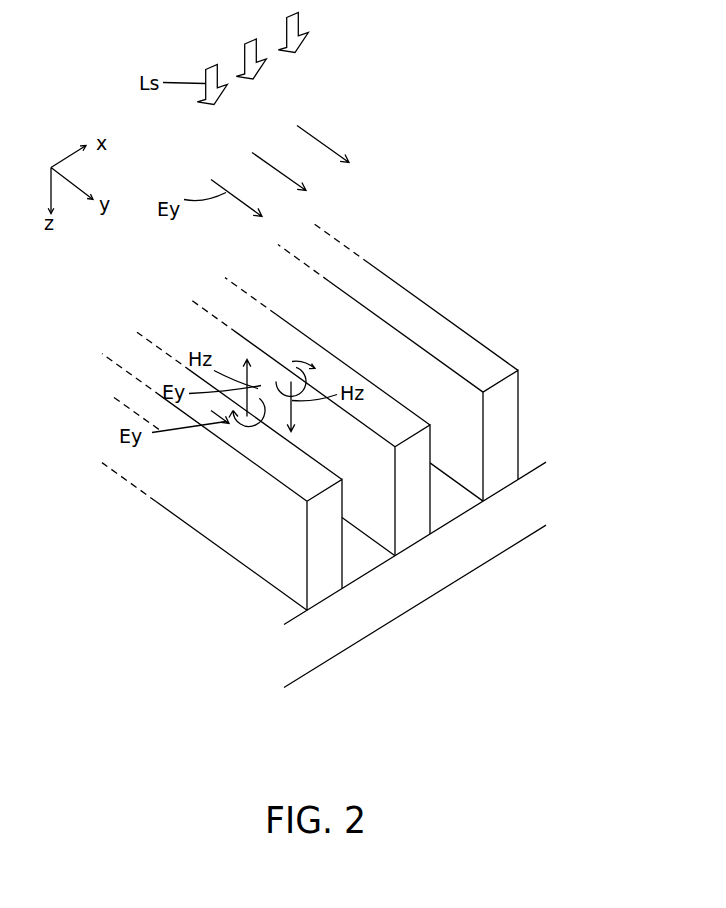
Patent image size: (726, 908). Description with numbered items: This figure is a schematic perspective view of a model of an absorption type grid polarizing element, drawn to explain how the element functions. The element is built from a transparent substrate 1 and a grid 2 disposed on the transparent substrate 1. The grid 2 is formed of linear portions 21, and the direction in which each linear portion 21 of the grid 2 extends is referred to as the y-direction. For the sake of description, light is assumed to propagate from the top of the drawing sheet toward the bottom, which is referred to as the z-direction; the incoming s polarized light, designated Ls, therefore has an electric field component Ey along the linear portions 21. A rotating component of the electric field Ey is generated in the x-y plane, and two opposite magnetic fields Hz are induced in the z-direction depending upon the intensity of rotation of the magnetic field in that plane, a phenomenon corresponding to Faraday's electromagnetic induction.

The transparent substrate 1 is at (422, 585).
The grid 2 is at (356, 436).
The linear portion 21 is at (327, 573).